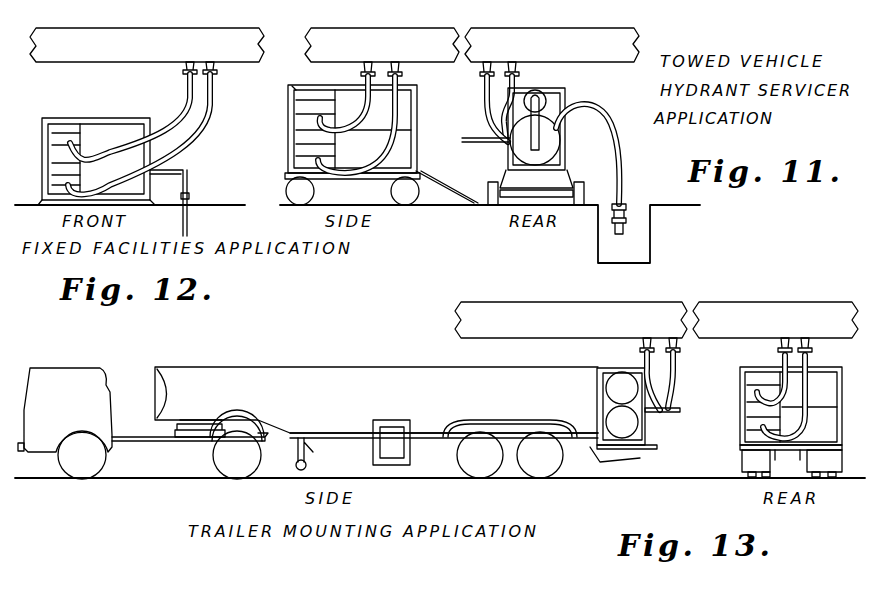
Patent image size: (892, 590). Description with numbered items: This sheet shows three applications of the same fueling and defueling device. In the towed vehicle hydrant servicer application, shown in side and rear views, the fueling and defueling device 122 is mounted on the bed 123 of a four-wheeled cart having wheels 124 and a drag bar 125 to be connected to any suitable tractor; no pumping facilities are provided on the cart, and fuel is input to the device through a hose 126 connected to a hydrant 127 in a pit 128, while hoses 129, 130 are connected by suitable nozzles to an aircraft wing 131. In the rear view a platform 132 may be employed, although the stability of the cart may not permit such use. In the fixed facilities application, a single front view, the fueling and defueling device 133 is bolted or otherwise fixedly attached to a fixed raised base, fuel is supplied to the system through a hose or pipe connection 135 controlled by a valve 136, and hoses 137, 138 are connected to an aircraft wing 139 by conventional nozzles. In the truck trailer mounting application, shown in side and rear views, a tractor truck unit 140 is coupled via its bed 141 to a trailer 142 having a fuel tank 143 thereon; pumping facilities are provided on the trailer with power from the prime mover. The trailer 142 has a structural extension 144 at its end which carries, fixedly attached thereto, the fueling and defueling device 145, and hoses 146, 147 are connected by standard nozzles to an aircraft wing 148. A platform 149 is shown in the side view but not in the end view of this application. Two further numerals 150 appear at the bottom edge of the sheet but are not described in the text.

In FIG. 11, the fueling and defueling device 122 is at (292, 86).
In FIG. 11, the bed 123 is at (360, 179).
In FIG. 11, the wheels 124 is at (402, 200).
In FIG. 11, the drag bar 125 is at (440, 176).
In FIG. 11, the hose 126 is at (610, 145).
In FIG. 11, the hydrant 127 is at (626, 227).
In FIG. 11, the pit 128 is at (651, 262).
In FIG. 11, the hose 129 is at (364, 82).
In FIG. 11, the hose 130 is at (399, 82).
In FIG. 11, the aircraft wing 131 is at (394, 32).
In FIG. 11, the platform 132 is at (481, 142).
In FIG. 12, the fueling and defueling device 133 is at (148, 118).
In FIG. 12, the hose or pipe connection 135 is at (190, 168).
In FIG. 12, the valve 136 is at (192, 196).
In FIG. 12, the hose 137 is at (188, 108).
In FIG. 12, the hose 138 is at (200, 130).
In FIG. 12, the aircraft wing 139 is at (144, 28).
In FIG. 13, the tractor truck unit 140 is at (95, 381).
In FIG. 13, the bed 141 is at (138, 442).
In FIG. 13, the trailer 142 is at (331, 440).
In FIG. 13, the fuel tank 143 is at (264, 375).
In FIG. 13, the structural extension 144 is at (614, 462).
In FIG. 13, the fueling and defueling device 145 is at (597, 368).
In FIG. 13, the hose 146 is at (672, 395).
In FIG. 13, the hose 147 is at (668, 372).
In FIG. 13, the aircraft wing 148 is at (548, 303).
In FIG. 13, the platform 149 is at (652, 414).
In FIG. 13, the hydrant servicer (next sheet) 150 is at (200, 574).